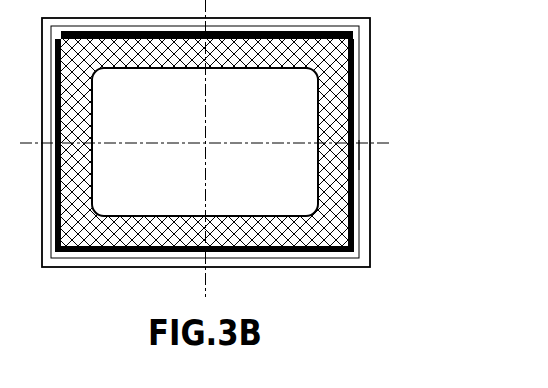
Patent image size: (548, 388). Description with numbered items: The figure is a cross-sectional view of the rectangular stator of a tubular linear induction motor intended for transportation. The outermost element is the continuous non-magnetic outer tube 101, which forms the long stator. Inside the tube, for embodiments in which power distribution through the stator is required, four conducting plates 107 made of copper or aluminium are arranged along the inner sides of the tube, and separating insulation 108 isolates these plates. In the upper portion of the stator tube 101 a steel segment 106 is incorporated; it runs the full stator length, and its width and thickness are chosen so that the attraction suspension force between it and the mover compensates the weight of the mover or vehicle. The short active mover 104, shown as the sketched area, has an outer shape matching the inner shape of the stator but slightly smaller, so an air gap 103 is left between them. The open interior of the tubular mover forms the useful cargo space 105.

The non-magnetic outer tube 101 is at (359, 61).
The air gap 103 is at (352, 123).
The active mover 104 is at (354, 181).
The cargo space 105 is at (294, 209).
The steel segment 106 is at (350, 30).
The conducting plates 107 is at (354, 92).
The separating insulation 108 is at (357, 155).